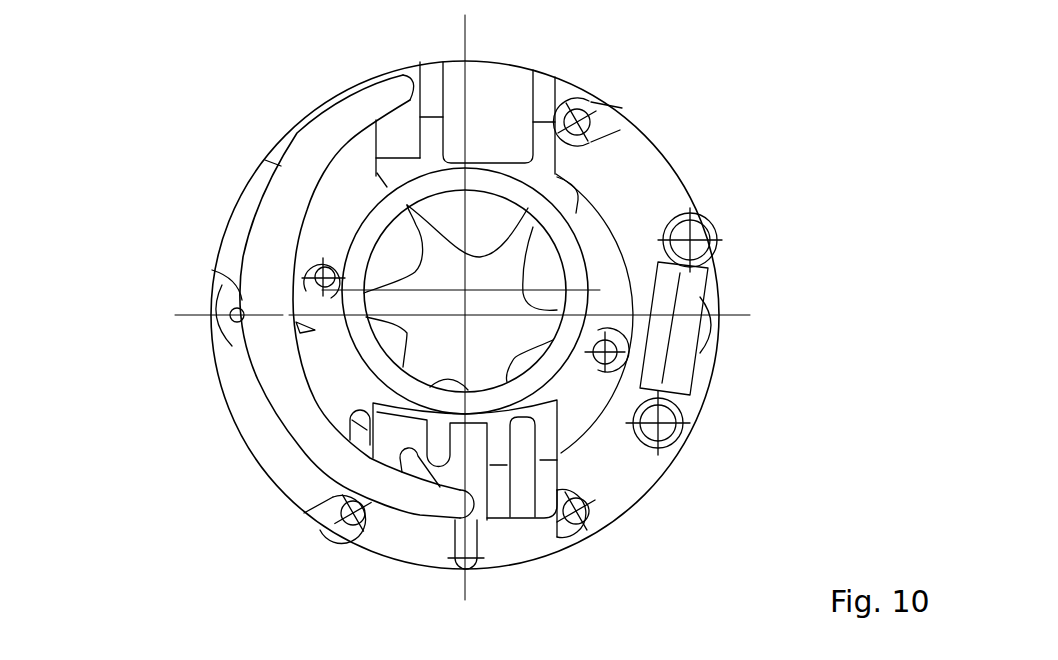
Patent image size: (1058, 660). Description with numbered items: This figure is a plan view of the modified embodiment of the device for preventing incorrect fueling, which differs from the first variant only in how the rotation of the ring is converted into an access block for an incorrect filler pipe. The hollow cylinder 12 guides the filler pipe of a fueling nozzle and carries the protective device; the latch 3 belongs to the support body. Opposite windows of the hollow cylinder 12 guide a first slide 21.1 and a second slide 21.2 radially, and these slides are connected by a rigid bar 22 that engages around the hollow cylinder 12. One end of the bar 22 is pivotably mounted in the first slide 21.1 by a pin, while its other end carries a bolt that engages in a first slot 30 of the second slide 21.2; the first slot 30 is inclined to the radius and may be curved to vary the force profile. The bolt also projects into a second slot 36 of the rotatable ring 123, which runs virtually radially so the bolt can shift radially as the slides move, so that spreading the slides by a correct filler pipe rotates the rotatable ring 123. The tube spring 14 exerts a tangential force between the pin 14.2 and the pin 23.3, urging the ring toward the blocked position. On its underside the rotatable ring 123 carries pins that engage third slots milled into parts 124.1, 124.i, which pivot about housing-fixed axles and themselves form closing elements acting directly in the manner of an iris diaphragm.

The latch 3 is at (395, 545).
The hollow cylinder 12 is at (558, 228).
The tube spring 14 is at (683, 353).
The pin 14.2 is at (697, 238).
The first slide 21.1 is at (543, 87).
The second slide 21.2 is at (498, 486).
The bar 22 is at (272, 230).
The pin 23.3 is at (658, 428).
The first slot 30 is at (416, 460).
The second slot 36 is at (457, 537).
The rotatable ring 123 is at (288, 478).
The part 124.1 is at (330, 351).
The part 124.i is at (582, 408).